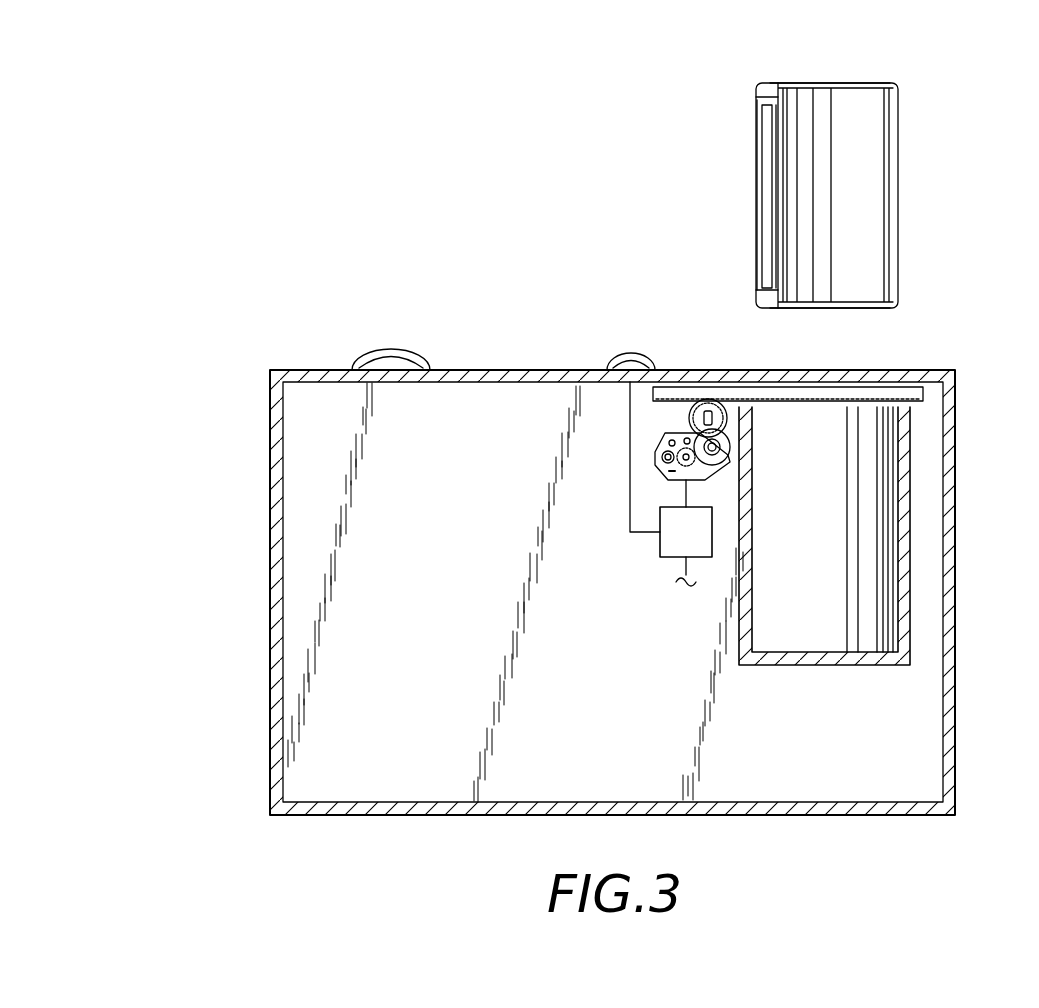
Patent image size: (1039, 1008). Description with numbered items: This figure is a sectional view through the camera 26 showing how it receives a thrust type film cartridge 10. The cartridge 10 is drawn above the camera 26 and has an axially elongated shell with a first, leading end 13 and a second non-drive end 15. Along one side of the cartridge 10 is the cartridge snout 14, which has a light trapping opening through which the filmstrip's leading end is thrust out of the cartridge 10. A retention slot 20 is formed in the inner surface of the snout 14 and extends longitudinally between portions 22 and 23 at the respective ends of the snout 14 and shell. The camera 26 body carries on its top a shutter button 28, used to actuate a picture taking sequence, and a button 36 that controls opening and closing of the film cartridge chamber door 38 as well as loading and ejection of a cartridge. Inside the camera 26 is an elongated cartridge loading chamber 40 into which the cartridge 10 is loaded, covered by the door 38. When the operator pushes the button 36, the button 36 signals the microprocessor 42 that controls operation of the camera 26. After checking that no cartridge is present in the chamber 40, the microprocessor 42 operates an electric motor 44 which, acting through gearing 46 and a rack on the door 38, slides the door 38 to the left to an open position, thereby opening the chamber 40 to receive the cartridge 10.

The film cartridge 10 is at (815, 188).
The first leading end 13 is at (838, 308).
The cartridge snout 14 is at (757, 148).
The second non-drive end 15 is at (851, 83).
The retention slot 20 is at (771, 184).
The portion of snout end 22 is at (763, 297).
The portion of snout end 23 is at (768, 97).
The camera 26 is at (222, 513).
The shutter button 28 is at (390, 348).
The button 36 is at (635, 353).
The film cartridge chamber door 38 is at (925, 392).
The cartridge loading chamber 40 is at (877, 482).
The microprocessor 42 is at (662, 556).
The electric motor 44 is at (657, 465).
The gearing 46 is at (680, 418).